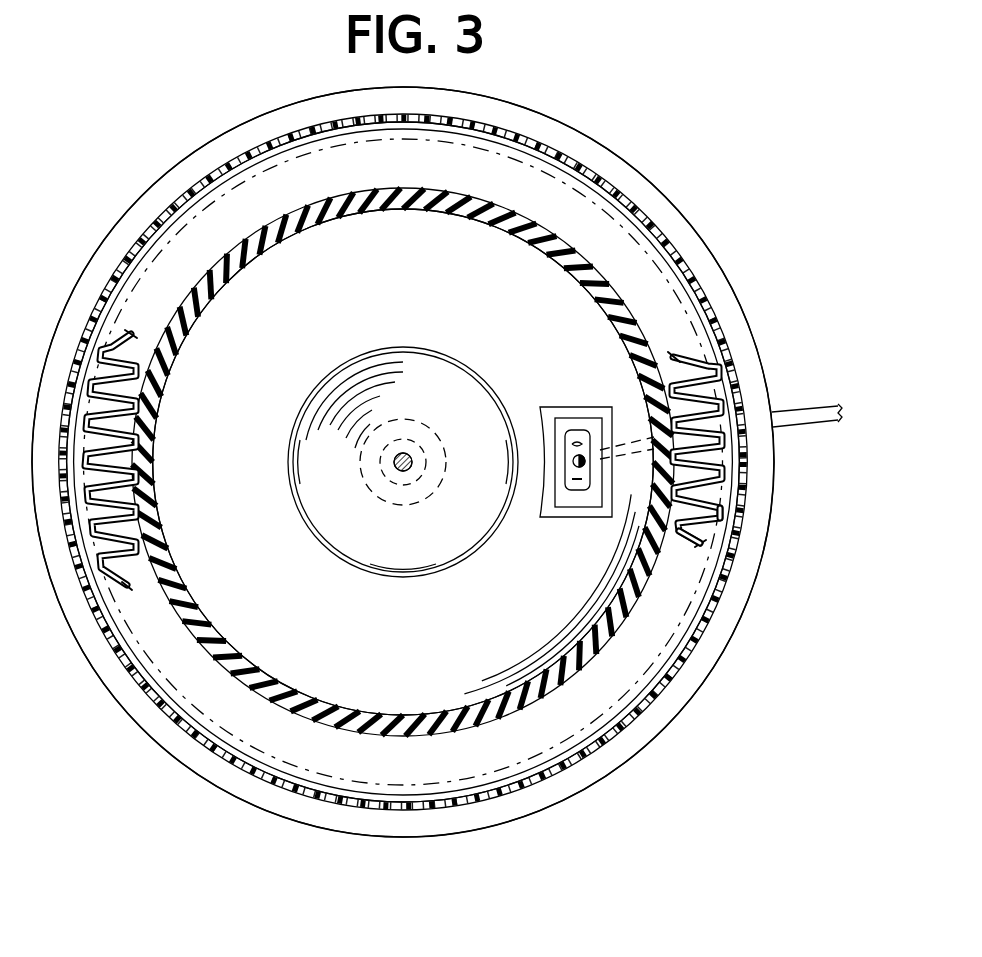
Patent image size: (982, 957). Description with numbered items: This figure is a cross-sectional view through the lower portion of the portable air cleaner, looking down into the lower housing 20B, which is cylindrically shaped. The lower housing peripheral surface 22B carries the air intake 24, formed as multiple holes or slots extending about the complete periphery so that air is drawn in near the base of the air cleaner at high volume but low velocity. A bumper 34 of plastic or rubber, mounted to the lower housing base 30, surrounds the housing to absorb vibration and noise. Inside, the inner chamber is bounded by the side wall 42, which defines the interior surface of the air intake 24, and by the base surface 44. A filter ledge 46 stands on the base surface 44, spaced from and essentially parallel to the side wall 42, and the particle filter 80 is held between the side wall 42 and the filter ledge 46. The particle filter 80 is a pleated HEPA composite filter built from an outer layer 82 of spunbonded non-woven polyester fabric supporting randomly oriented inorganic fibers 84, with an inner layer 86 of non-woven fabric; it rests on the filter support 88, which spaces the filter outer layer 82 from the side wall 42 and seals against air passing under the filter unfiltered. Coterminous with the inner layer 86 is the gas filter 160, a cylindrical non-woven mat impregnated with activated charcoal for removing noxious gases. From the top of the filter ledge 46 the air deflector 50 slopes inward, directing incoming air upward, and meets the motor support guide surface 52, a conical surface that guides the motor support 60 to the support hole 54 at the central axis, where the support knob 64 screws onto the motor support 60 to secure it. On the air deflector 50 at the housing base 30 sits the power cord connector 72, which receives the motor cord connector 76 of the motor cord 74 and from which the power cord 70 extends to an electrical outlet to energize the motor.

The lower housing 20B is at (152, 192).
The lower housing peripheral surface 22B is at (237, 768).
The air intake 24 is at (385, 812).
The lower housing base 30 is at (275, 282).
The bumper 34 is at (578, 795).
The side wall 42 is at (150, 663).
The base surface 44 is at (647, 698).
The filter ledge 46 is at (480, 716).
The air deflector 50 is at (348, 690).
The motor support guide surface 52 is at (375, 372).
The support hole 54 is at (410, 455).
The motor support 60 is at (410, 478).
The support knob 64 is at (390, 502).
The power cord 70 is at (812, 412).
The power cord connector 72 is at (592, 500).
The motor cord 74 is at (573, 443).
The motor cord connector 76 is at (577, 488).
The particle filter 80 is at (702, 357).
The filter outer layer 82 is at (722, 516).
The inorganic fibers 84 is at (700, 525).
The inner layer 86 is at (132, 538).
The filter support 88 is at (673, 662).
The gas filter 160 is at (170, 587).